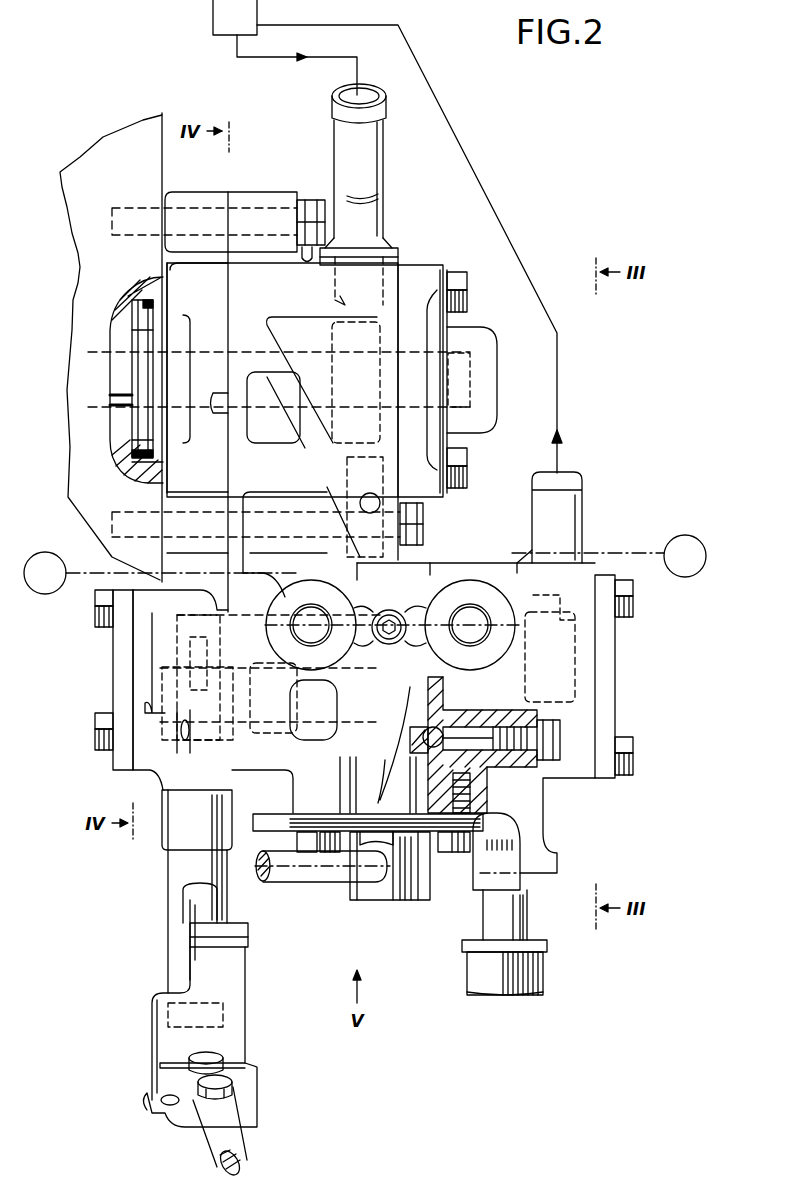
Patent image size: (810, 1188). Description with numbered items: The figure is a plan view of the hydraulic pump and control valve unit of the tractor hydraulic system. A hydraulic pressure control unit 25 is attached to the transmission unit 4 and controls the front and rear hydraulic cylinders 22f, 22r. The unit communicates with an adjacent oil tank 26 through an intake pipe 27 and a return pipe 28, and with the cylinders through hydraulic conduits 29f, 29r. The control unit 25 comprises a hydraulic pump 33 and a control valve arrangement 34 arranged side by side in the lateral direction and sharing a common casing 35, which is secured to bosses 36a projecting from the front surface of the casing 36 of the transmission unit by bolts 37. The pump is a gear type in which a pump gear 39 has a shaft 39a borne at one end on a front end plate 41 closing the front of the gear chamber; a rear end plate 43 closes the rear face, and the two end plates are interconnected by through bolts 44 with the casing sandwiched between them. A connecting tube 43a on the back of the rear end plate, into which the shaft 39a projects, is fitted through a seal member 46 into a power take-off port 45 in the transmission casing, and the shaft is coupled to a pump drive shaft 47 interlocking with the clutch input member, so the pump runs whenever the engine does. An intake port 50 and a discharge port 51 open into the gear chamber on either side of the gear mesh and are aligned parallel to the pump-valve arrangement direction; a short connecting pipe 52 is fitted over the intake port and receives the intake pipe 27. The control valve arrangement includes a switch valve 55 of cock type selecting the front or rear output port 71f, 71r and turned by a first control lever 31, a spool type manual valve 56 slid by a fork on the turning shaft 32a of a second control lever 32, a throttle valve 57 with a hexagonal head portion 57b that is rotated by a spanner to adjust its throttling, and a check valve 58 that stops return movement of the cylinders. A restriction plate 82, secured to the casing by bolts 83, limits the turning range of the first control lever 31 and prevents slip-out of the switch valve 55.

The transmission unit 4 is at (94, 144).
The hydraulic pressure control unit 25 is at (420, 226).
The oil tank 26 is at (235, 17).
The intake pipe 27 is at (281, 58).
The return pipe 28 is at (428, 79).
The hydraulic conduit 29r is at (85, 572).
The hydraulic conduit 29f is at (618, 553).
The rear hydraulic cylinder 22r is at (45, 573).
The front hydraulic cylinder 22f is at (685, 556).
The first control lever 31 is at (297, 882).
The second control lever 32 is at (238, 1147).
The turning shaft 32a is at (172, 870).
The hydraulic pump 33 is at (469, 337).
The control valve arrangement 34 is at (440, 553).
The casing 35 is at (279, 402).
The casing of the transmission unit 36 is at (76, 288).
The bosses 36a is at (195, 198).
The bolts 37 is at (308, 200).
The pump gear 39 is at (359, 281).
The shaft 39a is at (208, 352).
The front end plate 41 is at (432, 266).
The rear end plate 43 is at (185, 272).
The connecting tube 43a is at (133, 430).
The through bolts 44 is at (458, 272).
The power take-off port 45 is at (120, 303).
The seal member 46 is at (147, 472).
The pump drive shaft 47 is at (117, 355).
The intake port 50 is at (333, 288).
The discharge port 51 is at (348, 472).
The connecting pipe 52 is at (384, 138).
The switch valve 55 is at (407, 900).
The manual valve 56 is at (188, 628).
The throttle valve 57 is at (528, 910).
The hexagonal head portion 57b is at (523, 997).
The check valve 58 is at (392, 758).
The rear output port 71r is at (313, 622).
The front output port 71f is at (513, 547).
The restriction plate 82 is at (508, 821).
The bolts 83 is at (448, 854).